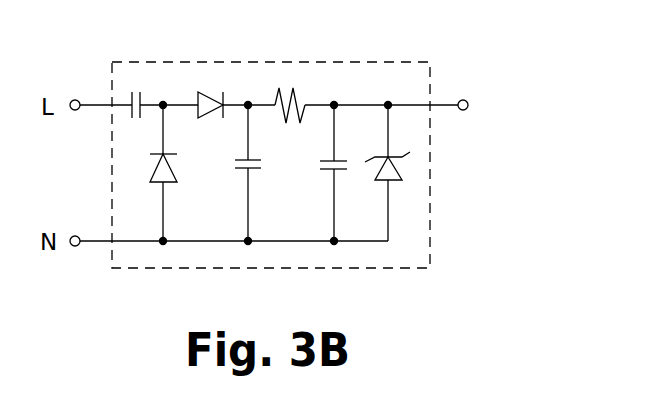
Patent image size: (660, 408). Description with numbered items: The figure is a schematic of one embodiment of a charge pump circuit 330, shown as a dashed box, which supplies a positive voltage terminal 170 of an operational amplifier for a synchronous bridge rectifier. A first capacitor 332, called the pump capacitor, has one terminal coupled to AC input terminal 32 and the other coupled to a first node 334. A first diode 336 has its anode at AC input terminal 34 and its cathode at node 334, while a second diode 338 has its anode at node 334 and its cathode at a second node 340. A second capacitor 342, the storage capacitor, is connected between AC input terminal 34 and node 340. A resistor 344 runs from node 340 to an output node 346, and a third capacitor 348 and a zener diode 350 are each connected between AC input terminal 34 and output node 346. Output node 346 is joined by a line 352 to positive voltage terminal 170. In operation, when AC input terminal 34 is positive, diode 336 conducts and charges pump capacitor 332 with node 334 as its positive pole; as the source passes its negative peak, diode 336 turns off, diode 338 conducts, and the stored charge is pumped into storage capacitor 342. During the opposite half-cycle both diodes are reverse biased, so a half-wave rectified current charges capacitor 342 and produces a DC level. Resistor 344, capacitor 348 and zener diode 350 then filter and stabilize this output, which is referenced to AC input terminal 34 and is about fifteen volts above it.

The AC input terminal 32 is at (74, 99).
The AC input terminal 34 is at (74, 247).
The positive voltage terminal 170 is at (464, 99).
The charge pump circuit 330 is at (378, 63).
The first capacitor 332 is at (128, 112).
The first node 334 is at (163, 101).
The first diode 336 is at (167, 184).
The second diode 338 is at (211, 116).
The second node 340 is at (248, 102).
The second capacitor 342 is at (255, 169).
The resistor 344 is at (296, 92).
The output node 346 is at (360, 103).
The third capacitor 348 is at (322, 165).
The zener diode 350 is at (399, 168).
The line 352 is at (443, 106).